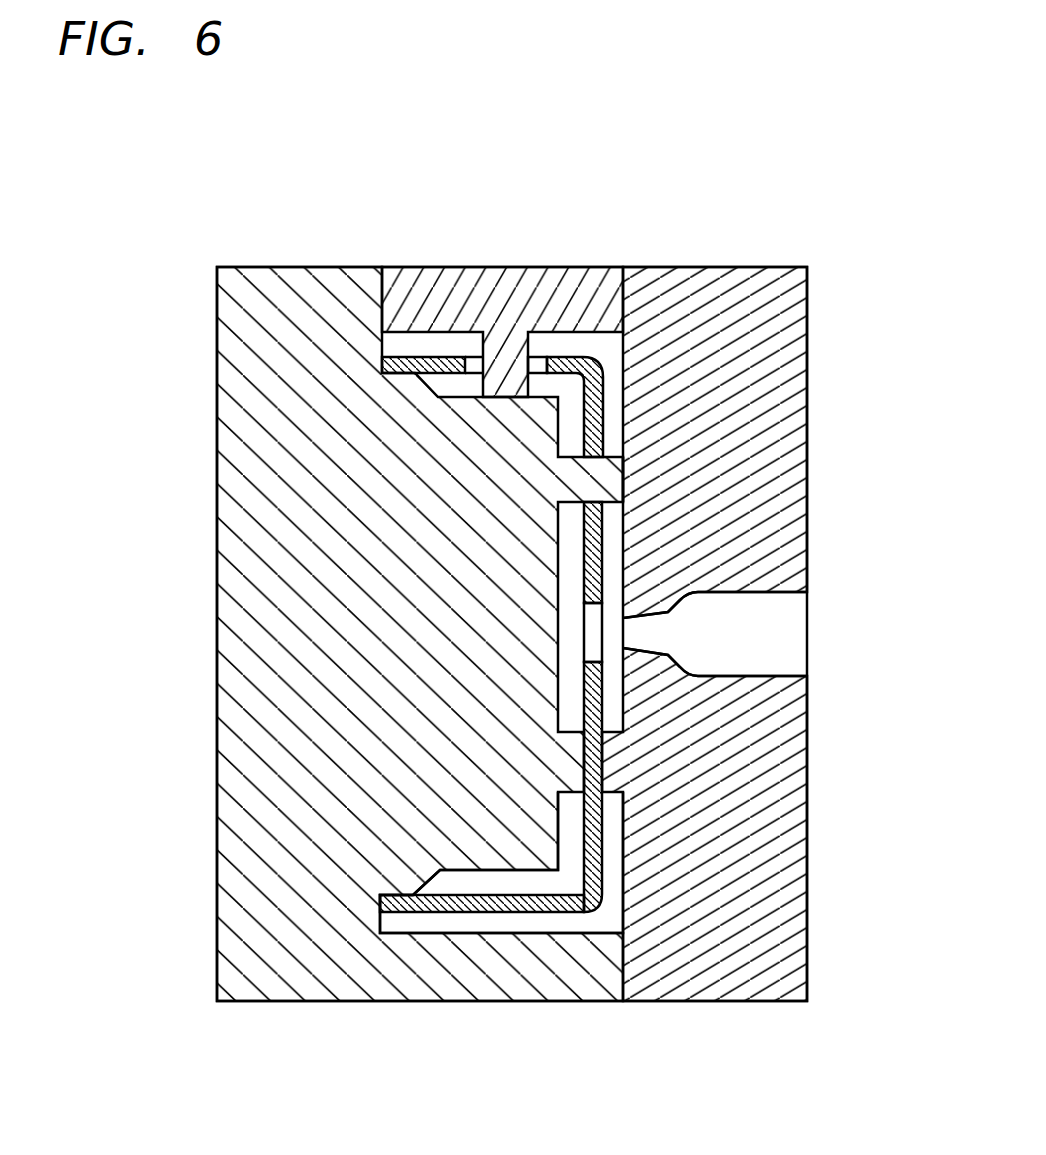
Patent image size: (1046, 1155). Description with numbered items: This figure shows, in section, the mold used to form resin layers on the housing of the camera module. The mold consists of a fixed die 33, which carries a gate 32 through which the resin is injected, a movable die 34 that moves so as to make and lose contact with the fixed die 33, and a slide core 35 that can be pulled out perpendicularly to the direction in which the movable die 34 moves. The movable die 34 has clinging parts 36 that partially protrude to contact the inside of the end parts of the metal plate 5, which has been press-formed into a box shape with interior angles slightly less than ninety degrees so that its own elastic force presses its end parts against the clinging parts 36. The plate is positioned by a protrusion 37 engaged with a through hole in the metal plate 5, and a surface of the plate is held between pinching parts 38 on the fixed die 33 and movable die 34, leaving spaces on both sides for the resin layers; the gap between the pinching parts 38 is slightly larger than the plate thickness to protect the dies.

The metal plate 5 is at (587, 355).
The gate 32 is at (753, 650).
The fixed die 33 is at (717, 254).
The movable die 34 is at (296, 254).
The slide core 35 is at (511, 254).
The clinging parts 36 is at (439, 361).
The protrusion 37 is at (622, 483).
The pinching parts 38 is at (572, 792).